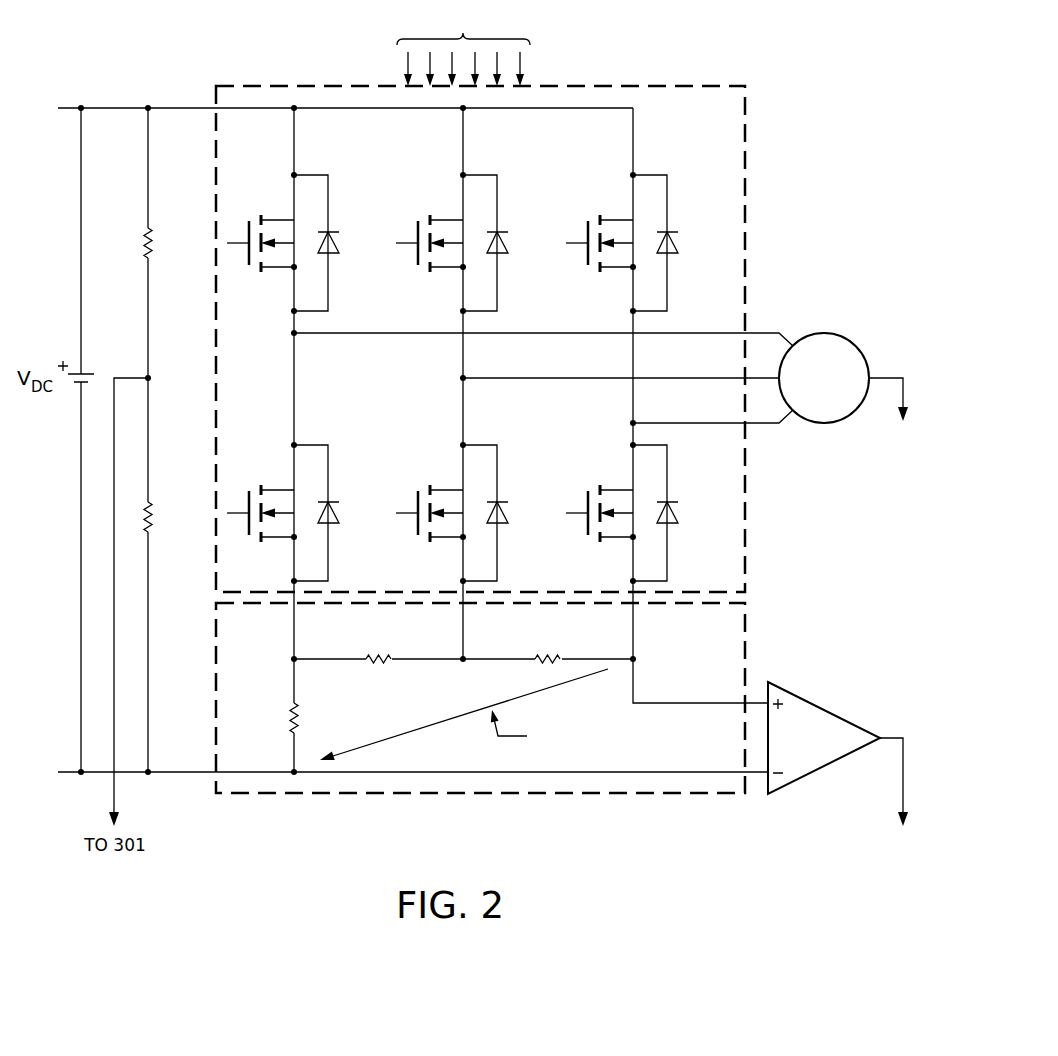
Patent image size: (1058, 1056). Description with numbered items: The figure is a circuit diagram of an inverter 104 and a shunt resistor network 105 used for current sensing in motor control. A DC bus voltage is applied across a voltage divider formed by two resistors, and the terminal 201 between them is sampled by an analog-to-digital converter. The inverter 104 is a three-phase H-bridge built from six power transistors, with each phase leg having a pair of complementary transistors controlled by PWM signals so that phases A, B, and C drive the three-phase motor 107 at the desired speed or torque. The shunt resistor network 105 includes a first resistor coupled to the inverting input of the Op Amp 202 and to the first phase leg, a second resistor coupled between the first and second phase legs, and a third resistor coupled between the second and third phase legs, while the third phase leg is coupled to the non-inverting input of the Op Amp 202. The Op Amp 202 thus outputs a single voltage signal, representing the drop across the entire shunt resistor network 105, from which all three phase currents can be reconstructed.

The inverter 104 is at (329, 79).
The shunt resistor network 105 is at (599, 808).
The 3-phase motor 107 is at (826, 333).
The terminal 201 is at (153, 383).
The Op Amp 202 is at (827, 768).